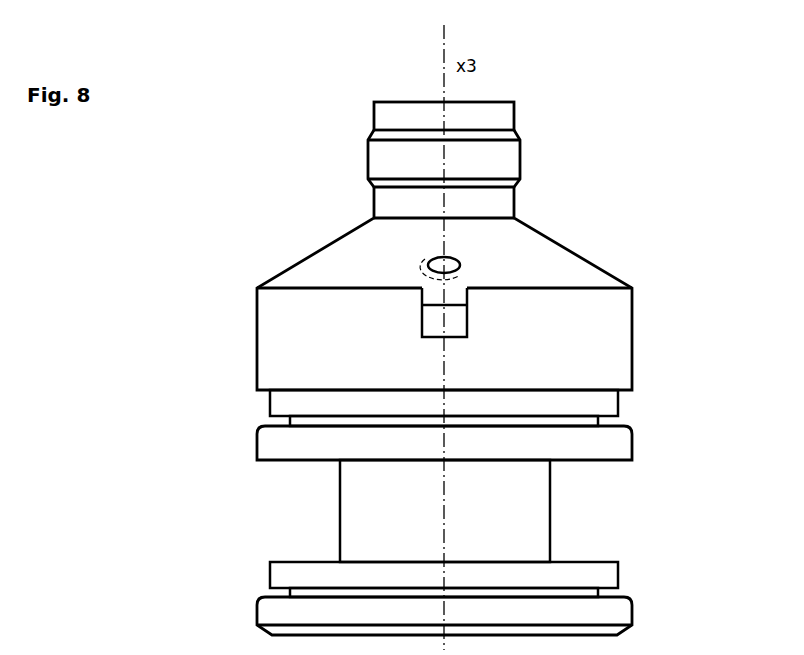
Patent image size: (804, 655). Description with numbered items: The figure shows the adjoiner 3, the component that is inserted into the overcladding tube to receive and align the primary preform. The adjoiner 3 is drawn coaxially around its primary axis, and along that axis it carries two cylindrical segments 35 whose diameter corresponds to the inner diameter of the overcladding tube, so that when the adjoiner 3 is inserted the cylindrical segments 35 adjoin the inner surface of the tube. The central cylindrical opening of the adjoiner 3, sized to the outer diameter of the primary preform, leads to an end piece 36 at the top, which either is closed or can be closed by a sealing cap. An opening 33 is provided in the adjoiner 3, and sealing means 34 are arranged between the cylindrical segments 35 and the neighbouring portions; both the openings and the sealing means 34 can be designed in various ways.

The adjoiner 3 is at (322, 255).
The opening 33 is at (444, 257).
The sealing means 34 is at (617, 422).
The cylindrical segments 35 is at (638, 610).
The end piece 36 is at (515, 116).